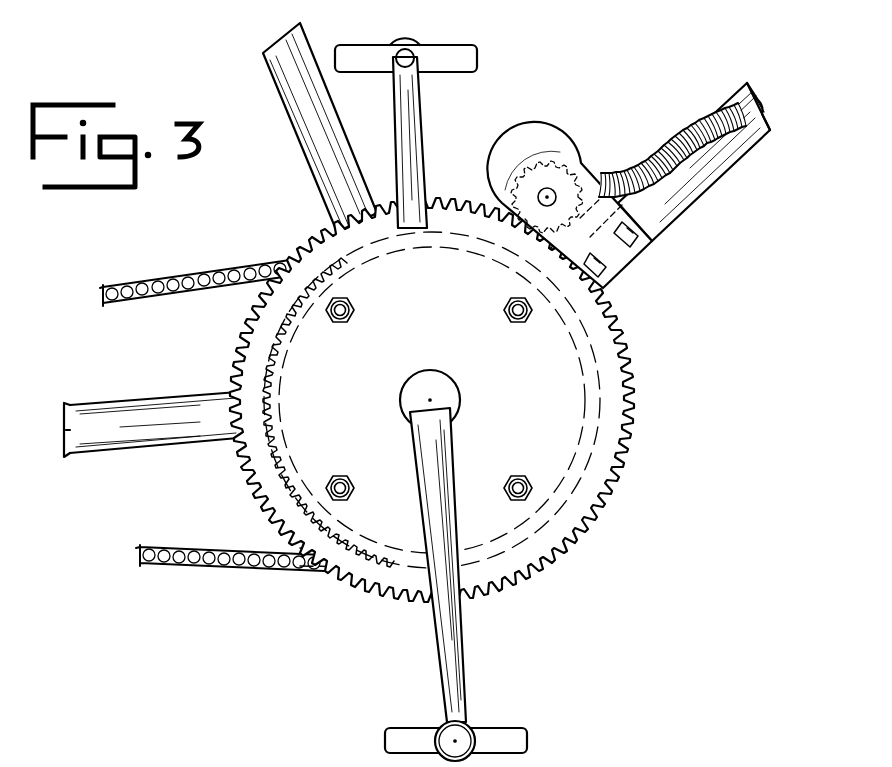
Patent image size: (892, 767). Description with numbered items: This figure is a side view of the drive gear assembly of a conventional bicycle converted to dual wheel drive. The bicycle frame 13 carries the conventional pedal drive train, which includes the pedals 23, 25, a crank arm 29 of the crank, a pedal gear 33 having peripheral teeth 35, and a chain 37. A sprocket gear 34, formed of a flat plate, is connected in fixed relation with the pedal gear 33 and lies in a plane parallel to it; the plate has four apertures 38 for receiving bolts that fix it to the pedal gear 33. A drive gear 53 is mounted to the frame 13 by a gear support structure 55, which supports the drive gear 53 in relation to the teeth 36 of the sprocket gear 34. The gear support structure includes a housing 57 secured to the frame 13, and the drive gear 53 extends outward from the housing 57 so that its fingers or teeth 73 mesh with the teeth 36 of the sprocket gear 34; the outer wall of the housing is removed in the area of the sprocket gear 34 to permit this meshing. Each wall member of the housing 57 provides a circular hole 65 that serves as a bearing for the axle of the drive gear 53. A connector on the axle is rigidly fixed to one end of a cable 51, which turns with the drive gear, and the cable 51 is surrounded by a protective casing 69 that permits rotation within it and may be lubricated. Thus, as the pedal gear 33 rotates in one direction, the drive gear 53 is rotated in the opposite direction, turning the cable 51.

The frame 13 is at (330, 138).
The pedal 23 is at (460, 50).
The pedal 25 is at (510, 733).
The crank arm 29 is at (416, 143).
The pedal gear 33 is at (238, 483).
The sprocket gear 34 is at (260, 327).
The peripheral teeth 35 is at (270, 513).
The teeth 36 is at (237, 358).
The chain 37 is at (190, 565).
The apertures 38 is at (343, 325).
The cable 51 is at (770, 133).
The drive gear 53 is at (513, 168).
The gear support structure 55 is at (564, 172).
The housing 57 is at (519, 138).
The circular hole 65 is at (552, 194).
The protective casing 69 is at (727, 160).
The teeth 73 is at (558, 160).